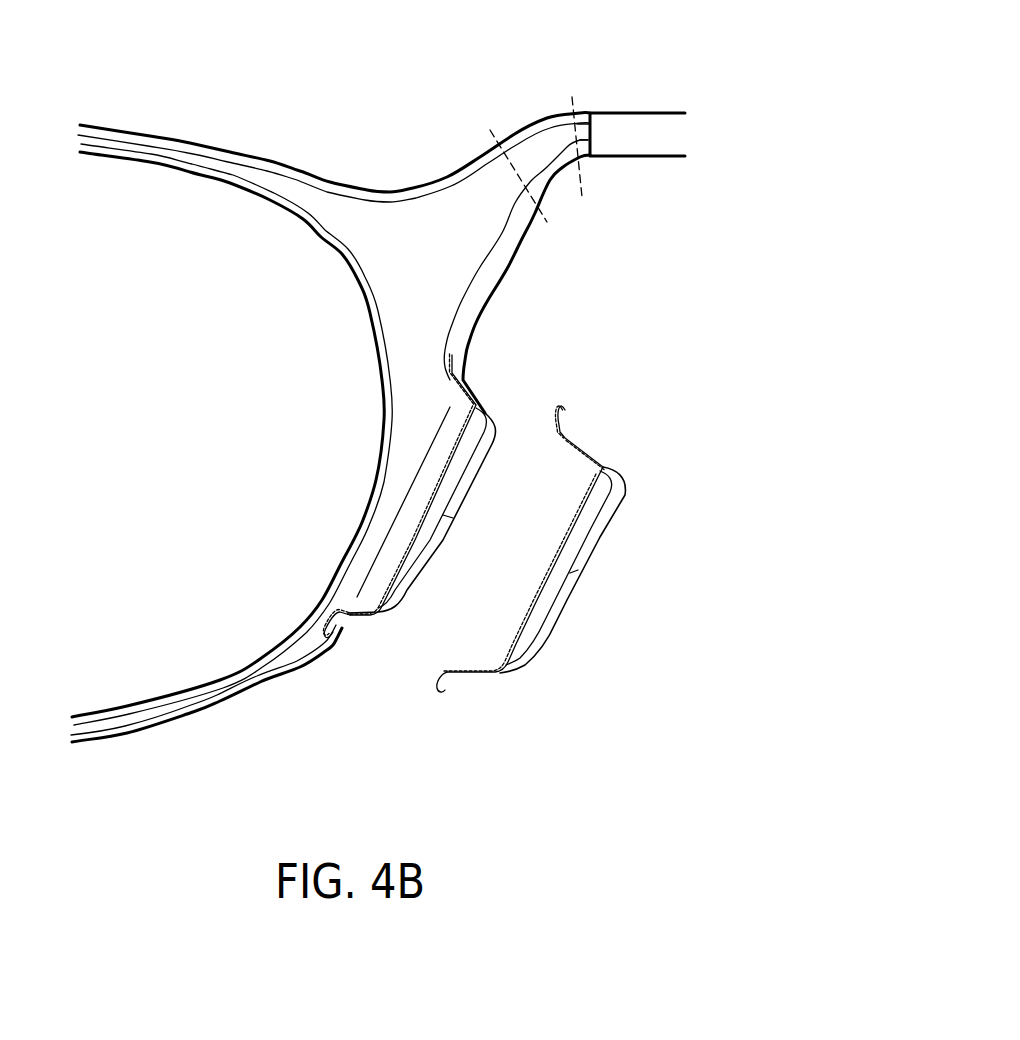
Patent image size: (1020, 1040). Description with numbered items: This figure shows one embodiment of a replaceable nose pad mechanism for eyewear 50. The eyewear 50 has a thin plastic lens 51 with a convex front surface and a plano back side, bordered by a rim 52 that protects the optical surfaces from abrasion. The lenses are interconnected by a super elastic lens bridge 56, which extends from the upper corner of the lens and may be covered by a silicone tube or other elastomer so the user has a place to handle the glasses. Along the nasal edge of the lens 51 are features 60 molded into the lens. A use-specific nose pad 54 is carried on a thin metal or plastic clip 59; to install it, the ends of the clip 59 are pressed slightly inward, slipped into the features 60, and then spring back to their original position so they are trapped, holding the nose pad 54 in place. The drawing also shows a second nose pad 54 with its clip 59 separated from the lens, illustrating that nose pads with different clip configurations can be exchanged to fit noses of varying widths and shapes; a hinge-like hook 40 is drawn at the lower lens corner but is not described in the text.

The eyewear 50 is at (498, 48).
The lens 51 is at (140, 222).
The rim 52 is at (232, 167).
The lens bridge 56 is at (647, 120).
The features 60 is at (447, 357).
The nose pad 54 is at (497, 427).
The clip 59 is at (573, 437).
The hinge hook 40 is at (340, 627).